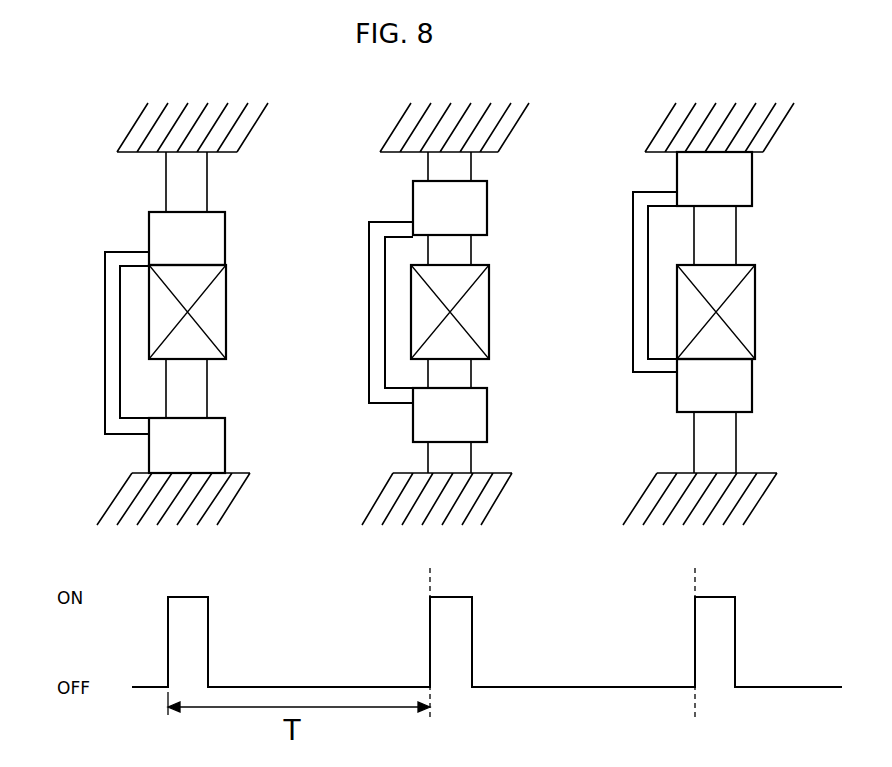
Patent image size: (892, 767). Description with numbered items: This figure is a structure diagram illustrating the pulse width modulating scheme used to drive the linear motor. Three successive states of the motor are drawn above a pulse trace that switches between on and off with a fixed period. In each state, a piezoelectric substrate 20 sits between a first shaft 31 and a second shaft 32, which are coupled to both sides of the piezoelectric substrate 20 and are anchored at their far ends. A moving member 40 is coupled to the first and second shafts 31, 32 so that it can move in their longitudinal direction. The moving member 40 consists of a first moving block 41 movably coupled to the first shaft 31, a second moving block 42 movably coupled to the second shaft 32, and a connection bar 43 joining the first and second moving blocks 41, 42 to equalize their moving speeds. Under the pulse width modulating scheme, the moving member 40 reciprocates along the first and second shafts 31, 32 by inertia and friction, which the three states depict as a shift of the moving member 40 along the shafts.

The piezoelectric substrate 20 is at (167, 303).
The first shaft 31 is at (207, 188).
The second shaft 32 is at (203, 394).
The moving member 40 is at (97, 245).
The first moving block 41 is at (203, 243).
The second moving block 42 is at (205, 441).
The connection bar 43 is at (117, 350).